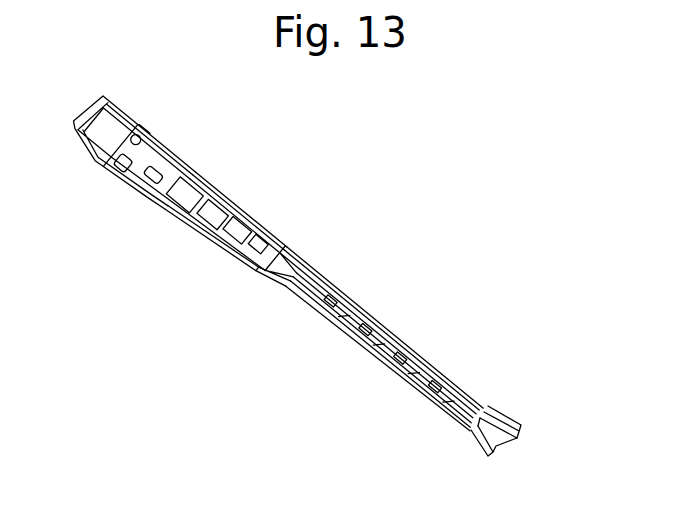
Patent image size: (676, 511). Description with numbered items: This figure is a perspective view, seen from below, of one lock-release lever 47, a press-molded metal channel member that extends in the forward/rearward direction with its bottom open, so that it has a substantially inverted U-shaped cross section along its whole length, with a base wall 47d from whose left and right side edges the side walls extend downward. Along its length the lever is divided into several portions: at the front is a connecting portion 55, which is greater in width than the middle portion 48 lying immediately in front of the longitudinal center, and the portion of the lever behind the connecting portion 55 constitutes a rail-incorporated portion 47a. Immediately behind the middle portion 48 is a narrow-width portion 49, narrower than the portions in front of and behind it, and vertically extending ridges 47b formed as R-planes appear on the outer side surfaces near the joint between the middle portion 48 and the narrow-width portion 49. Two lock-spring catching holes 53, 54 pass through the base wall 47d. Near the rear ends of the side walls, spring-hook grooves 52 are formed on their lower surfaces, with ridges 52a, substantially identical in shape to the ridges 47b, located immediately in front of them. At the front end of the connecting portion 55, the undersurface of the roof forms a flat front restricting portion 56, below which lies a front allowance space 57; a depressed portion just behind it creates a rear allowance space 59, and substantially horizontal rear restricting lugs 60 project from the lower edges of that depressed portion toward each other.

The lock-release lever 47 is at (275, 279).
The rail-incorporated portion 47a is at (278, 105).
The ridges 47b is at (281, 243).
The base wall 47d is at (243, 211).
The middle portion 48 is at (232, 137).
The narrow-width portion 49 is at (333, 259).
The spring-hook grooves 52 is at (512, 418).
The ridges 52a is at (503, 410).
The lock-spring catching hole 53 is at (232, 249).
The lock-spring catching hole 54 is at (165, 184).
The connecting portion 55 is at (139, 62).
The front restricting portion 56 is at (93, 118).
The front allowance space 57 is at (100, 140).
The rear allowance space 59 is at (150, 118).
The rear restricting lugs 60 is at (153, 138).